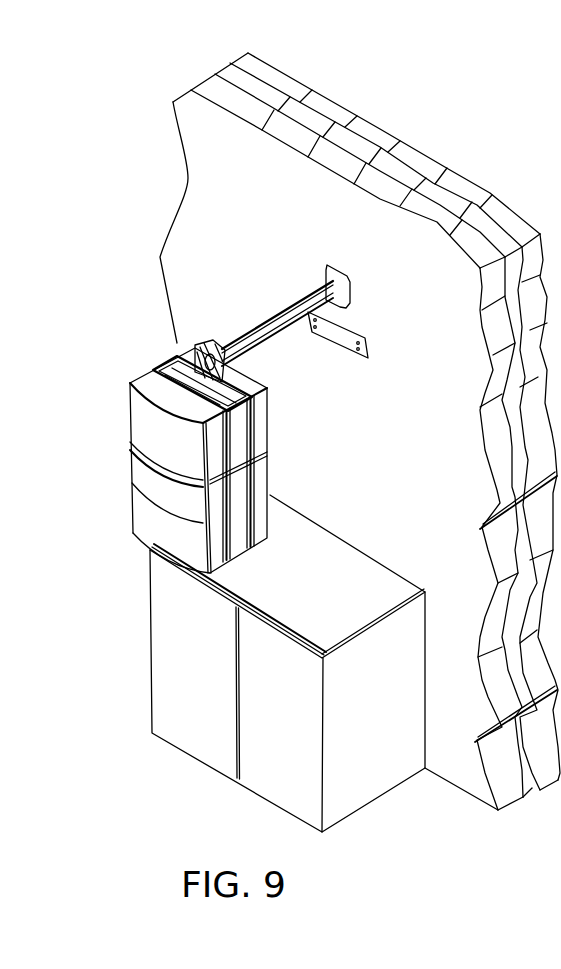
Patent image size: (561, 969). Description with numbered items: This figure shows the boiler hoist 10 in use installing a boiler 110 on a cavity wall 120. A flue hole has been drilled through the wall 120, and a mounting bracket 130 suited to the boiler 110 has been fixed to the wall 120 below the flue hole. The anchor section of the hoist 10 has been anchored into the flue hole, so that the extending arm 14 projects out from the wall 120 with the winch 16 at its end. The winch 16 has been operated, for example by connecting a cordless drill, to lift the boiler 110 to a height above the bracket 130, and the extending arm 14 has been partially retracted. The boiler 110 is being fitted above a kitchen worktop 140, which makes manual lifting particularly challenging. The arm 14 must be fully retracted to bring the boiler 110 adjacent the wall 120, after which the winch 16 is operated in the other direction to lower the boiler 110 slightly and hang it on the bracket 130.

The boiler hoist 10 is at (213, 332).
The extending arm 14 is at (240, 313).
The winch 16 is at (190, 348).
The boiler 110 is at (131, 473).
The cavity wall 120 is at (254, 215).
The mounting bracket 130 is at (367, 362).
The kitchen worktop 140 is at (330, 603).